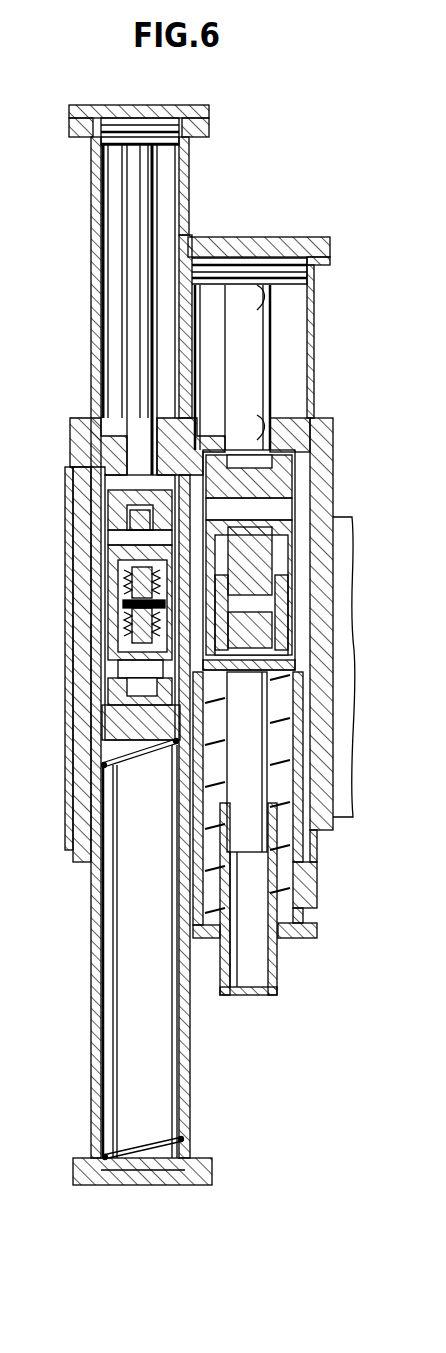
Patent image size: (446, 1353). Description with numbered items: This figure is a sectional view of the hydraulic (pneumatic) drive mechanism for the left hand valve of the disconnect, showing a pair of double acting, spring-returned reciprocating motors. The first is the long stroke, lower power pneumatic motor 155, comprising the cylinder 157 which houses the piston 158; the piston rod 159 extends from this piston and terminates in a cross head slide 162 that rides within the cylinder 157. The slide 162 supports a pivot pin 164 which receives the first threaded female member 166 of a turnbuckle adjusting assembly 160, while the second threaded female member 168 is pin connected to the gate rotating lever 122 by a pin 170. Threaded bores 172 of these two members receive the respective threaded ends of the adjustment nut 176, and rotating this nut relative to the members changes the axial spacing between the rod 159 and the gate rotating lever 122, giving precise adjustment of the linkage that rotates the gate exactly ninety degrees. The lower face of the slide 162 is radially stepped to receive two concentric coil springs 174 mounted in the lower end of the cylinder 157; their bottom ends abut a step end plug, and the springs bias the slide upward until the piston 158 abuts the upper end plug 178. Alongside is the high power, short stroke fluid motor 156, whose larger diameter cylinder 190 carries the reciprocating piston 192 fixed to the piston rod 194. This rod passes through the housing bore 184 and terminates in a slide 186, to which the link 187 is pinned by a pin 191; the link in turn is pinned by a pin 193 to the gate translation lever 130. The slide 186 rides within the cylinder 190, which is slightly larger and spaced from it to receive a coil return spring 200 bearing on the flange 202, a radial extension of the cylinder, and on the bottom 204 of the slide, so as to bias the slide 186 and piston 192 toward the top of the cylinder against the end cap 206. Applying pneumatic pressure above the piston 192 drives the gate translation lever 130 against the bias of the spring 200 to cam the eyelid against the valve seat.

The upper end plug 178 is at (170, 106).
The piston 158 is at (101, 165).
The pneumatic motor 155 is at (190, 179).
The cylinder 157 is at (91, 215).
The piston rod 159 is at (153, 237).
The end cap 206 is at (268, 236).
The reciprocating piston 192 is at (254, 292).
The piston rod 194 is at (263, 369).
The fluid motor 156 is at (315, 336).
The cylinder 190 is at (312, 391).
The housing bore 184 is at (260, 426).
The first threaded female member 166 is at (66, 481).
The pivot pin 164 is at (120, 517).
The cross head slide 162 is at (120, 535).
The turnbuckle adjusting assembly 160 is at (116, 563).
The threaded bores 172 is at (122, 587).
The concentric coil springs 174 is at (165, 602).
The second threaded female member 168 is at (120, 658).
The pin 170 is at (123, 670).
The gate rotating lever 122 is at (120, 690).
The slide 186 is at (300, 477).
The pin 191 is at (300, 505).
The link 187 is at (260, 555).
The adjustment nut 176 is at (157, 1186).
The pin 193 is at (280, 598).
The gate translation lever 130 is at (283, 636).
The bottom of the slide 204 is at (247, 678).
The coil return spring 200 is at (291, 885).
The flange 202 is at (296, 938).